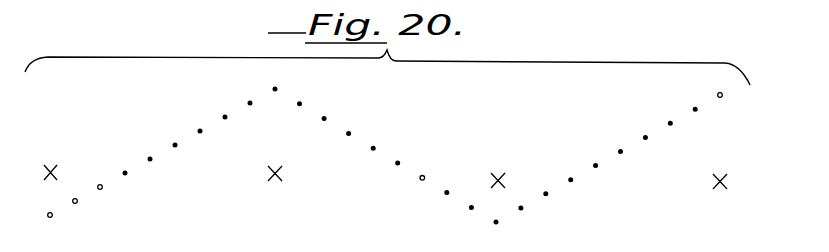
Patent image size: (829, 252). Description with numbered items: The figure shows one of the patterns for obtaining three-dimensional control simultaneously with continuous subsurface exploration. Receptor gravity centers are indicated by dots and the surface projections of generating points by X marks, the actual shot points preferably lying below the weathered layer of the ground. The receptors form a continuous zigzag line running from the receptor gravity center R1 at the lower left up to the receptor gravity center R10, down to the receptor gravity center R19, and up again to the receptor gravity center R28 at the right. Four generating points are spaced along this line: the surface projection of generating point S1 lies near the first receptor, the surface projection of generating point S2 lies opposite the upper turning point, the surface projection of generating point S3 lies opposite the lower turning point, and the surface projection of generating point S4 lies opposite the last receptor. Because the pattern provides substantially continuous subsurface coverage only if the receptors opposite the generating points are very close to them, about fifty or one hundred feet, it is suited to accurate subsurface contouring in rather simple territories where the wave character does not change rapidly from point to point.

The receptor gravity center R1 is at (51, 227).
The receptor gravity center R10 is at (286, 83).
The receptor gravity center R19 is at (500, 233).
The receptor gravity center R28 is at (730, 89).
The surface projection of generating point S1 is at (54, 165).
The surface projection of generating point S2 is at (275, 186).
The surface projection of generating point S3 is at (501, 173).
The surface projection of generating point S4 is at (718, 193).